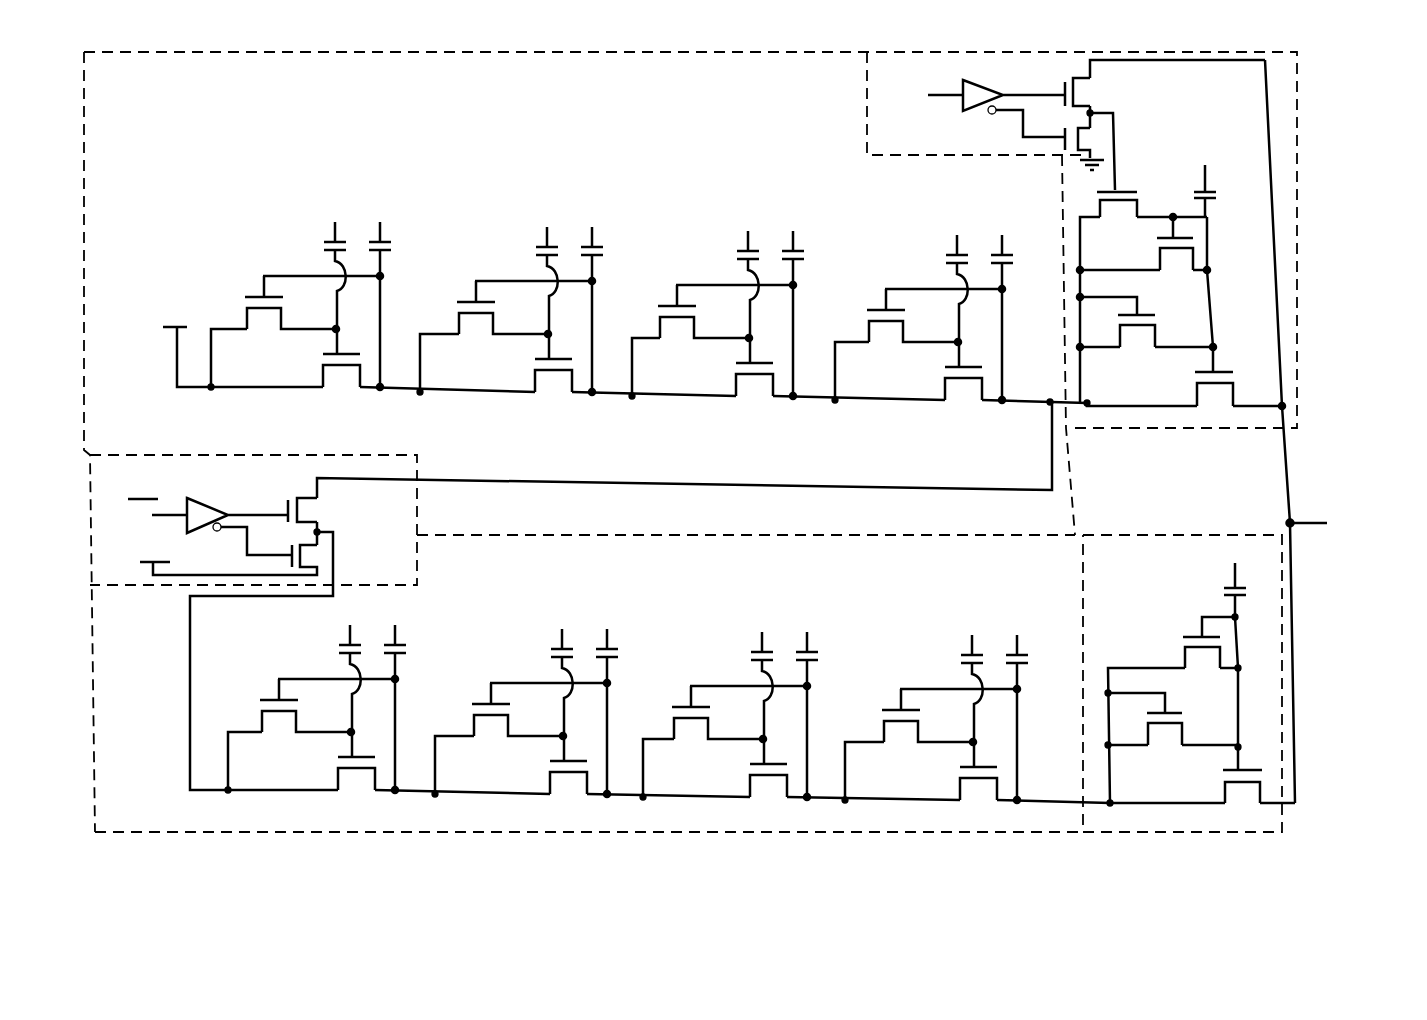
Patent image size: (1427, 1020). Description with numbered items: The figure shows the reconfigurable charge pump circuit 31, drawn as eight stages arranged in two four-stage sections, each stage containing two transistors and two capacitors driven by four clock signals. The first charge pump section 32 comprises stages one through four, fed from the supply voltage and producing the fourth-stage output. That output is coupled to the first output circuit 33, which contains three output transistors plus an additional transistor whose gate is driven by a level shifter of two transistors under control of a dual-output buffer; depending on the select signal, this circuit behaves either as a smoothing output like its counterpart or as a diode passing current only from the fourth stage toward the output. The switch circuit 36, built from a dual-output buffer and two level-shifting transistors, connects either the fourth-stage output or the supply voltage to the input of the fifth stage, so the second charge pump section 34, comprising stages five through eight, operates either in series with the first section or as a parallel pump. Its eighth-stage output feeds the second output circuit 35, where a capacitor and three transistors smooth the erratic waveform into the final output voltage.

The reconfigurable charge pump circuit 31 is at (346, 857).
The first charge pump section 32 is at (197, 117).
The first output circuit 33 is at (915, 151).
The second charge pump section 34 is at (160, 628).
The second output circuit 35 is at (1128, 596).
The switch circuit 36 is at (145, 488).